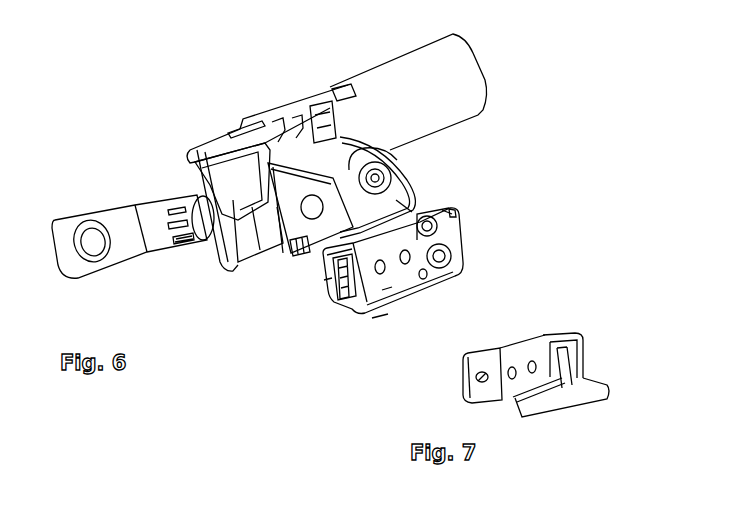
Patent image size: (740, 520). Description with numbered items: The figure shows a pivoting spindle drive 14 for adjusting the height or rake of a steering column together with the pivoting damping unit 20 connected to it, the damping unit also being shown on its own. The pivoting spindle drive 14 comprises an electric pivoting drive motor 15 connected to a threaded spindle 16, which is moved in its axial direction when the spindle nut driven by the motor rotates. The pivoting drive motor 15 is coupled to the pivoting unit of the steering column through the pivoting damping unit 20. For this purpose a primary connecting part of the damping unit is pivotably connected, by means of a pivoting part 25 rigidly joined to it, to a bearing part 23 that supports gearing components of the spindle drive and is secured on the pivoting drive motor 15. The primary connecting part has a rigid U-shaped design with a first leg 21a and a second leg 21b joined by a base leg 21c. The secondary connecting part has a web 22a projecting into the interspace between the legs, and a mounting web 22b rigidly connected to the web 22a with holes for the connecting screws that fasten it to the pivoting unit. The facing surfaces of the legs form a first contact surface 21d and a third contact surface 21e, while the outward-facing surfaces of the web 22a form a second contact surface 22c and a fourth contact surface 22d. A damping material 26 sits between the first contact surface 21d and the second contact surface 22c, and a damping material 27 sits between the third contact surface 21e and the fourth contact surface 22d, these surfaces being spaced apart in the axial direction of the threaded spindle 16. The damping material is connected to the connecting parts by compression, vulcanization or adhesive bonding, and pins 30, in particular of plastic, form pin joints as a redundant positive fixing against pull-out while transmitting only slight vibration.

In FIG. 6, the pivoting spindle drive 14 is at (205, 242).
In FIG. 6, the electric pivoting drive motor 15 is at (463, 68).
In FIG. 6, the threaded spindle 16 is at (342, 172).
In FIG. 6, the pivoting damping unit 20 is at (363, 342).
In FIG. 6, the first leg 21a is at (335, 265).
In FIG. 7, the first leg 21a is at (507, 392).
In FIG. 6, the second leg 21b is at (437, 208).
In FIG. 7, the second leg 21b is at (585, 358).
In FIG. 6, the base leg 21c is at (403, 207).
In FIG. 7, the base leg 21c is at (563, 338).
In FIG. 6, the first contact surface 21d is at (382, 288).
In FIG. 6, the third contact surface 21e is at (455, 260).
In FIG. 6, the web 22a is at (350, 310).
In FIG. 7, the web 22a is at (587, 377).
In FIG. 6, the mounting web 22b is at (452, 213).
In FIG. 7, the mounting web 22b is at (480, 362).
In FIG. 6, the second contact surface 22c is at (342, 303).
In FIG. 6, the fourth contact surface 22d is at (452, 228).
In FIG. 6, the bearing part 23 is at (223, 150).
In FIG. 6, the pivoting part 25 is at (290, 262).
In FIG. 6, the damping material 26 is at (330, 276).
In FIG. 6, the damping material 27 is at (380, 322).
In FIG. 7, the pins 30 is at (513, 367).